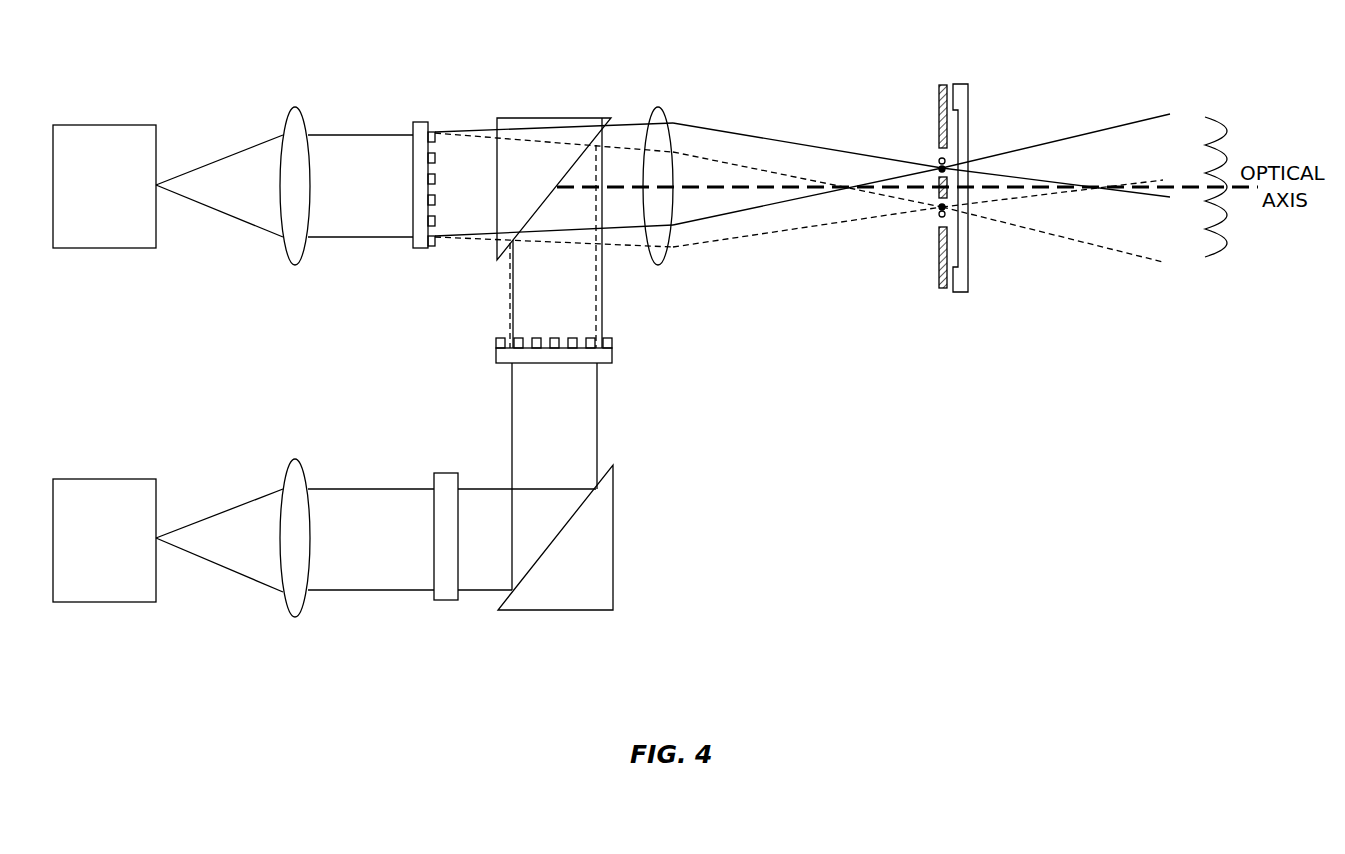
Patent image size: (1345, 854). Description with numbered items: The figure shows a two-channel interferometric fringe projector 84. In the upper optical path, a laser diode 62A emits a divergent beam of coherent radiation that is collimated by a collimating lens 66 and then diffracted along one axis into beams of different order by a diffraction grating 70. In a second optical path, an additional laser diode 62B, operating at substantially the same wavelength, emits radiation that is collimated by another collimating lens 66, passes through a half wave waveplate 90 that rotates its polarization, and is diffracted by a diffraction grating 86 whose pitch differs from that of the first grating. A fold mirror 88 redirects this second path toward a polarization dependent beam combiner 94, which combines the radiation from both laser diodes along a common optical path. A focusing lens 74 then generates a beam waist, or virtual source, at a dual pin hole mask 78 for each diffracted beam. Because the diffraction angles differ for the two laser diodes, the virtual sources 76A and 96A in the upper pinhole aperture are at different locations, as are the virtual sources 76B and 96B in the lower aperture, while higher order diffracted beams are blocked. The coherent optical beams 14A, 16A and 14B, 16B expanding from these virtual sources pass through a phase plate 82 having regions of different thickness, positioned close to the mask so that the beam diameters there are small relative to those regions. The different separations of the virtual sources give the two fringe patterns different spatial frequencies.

The coherent optical beam 14A is at (1060, 147).
The coherent optical beam 16A is at (1056, 182).
The coherent optical beam 14B is at (1062, 227).
The coherent optical beam 16B is at (1052, 193).
The laser diode 62A is at (104, 186).
The laser diode 62B is at (104, 546).
The collimating lens 66 is at (294, 266).
The diffraction grating 70 is at (421, 249).
The focusing lens 74 is at (658, 266).
The beam waist 76A is at (939, 168).
The beam waist 76B is at (939, 209).
The dual pin hole mask 78 is at (943, 290).
The phase plate 82 is at (960, 294).
The interferometric fringe projector 84 is at (657, 30).
The diffraction grating 86 is at (614, 352).
The fold mirror 88 is at (563, 611).
The half wave waveplate 90 is at (446, 601).
The polarization dependent beam combiner 94 is at (543, 117).
The virtual source 96A is at (941, 158).
The virtual source 96B is at (941, 217).